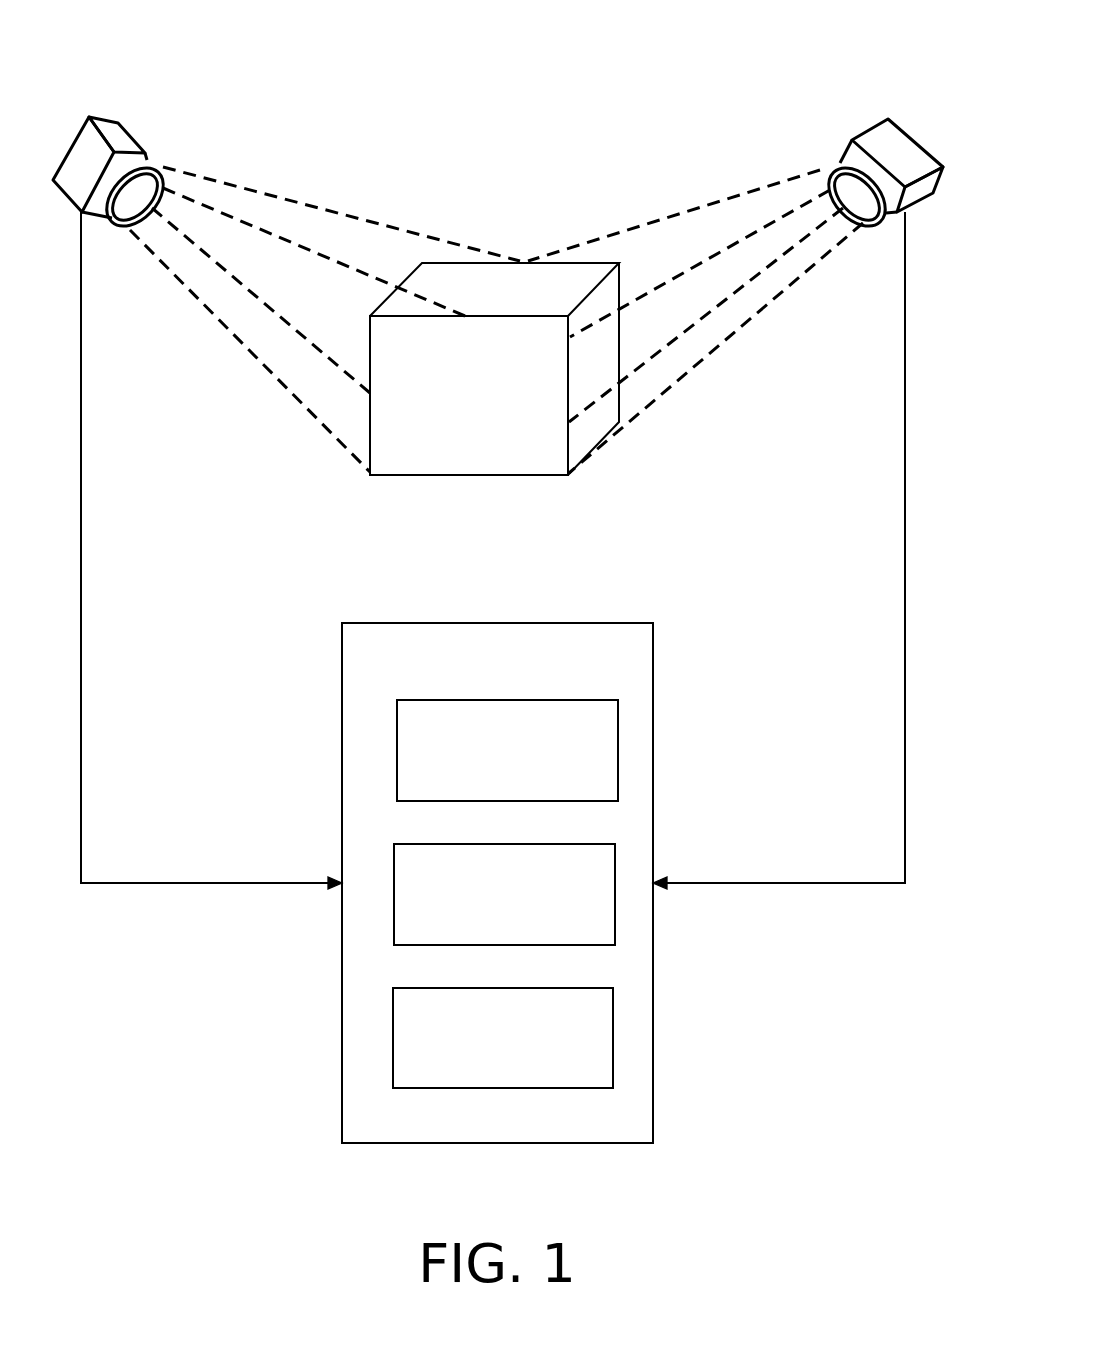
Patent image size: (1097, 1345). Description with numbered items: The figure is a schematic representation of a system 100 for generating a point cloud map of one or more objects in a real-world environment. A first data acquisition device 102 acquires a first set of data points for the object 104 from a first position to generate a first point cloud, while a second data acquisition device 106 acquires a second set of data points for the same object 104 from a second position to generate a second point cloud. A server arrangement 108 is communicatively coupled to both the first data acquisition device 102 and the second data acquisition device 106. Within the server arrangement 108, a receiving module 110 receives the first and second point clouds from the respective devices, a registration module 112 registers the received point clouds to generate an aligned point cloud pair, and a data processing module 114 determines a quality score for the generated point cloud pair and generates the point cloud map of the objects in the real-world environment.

The system 100 is at (848, 57).
The first data acquisition device 102 is at (118, 137).
The object 104 is at (492, 463).
The second data acquisition device 106 is at (880, 137).
The server arrangement 108 is at (474, 676).
The receiving module 110 is at (480, 761).
The registration module 112 is at (476, 907).
The data processing module 114 is at (476, 1041).